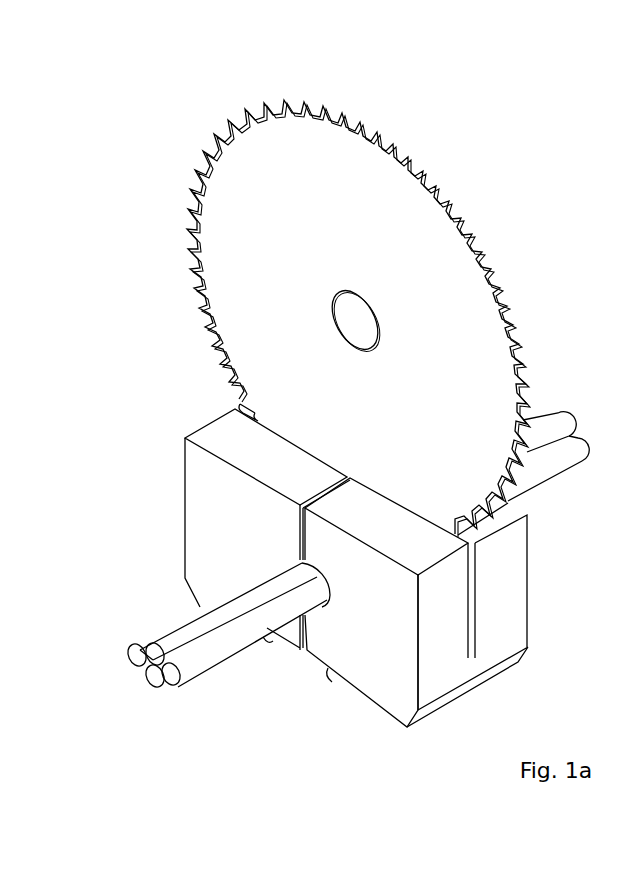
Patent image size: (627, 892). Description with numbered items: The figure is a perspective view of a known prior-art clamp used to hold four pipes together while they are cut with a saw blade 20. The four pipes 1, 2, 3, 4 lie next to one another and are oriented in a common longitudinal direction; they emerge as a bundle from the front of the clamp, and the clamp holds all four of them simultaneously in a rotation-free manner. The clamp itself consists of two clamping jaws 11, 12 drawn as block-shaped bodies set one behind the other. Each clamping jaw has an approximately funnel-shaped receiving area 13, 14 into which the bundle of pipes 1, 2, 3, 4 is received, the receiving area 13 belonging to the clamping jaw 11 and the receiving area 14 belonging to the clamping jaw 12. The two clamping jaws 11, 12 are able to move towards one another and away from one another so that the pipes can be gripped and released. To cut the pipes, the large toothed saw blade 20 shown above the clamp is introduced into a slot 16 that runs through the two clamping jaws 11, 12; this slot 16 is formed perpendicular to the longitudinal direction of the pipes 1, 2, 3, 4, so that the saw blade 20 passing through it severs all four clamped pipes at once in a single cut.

The saw blade 20 is at (342, 182).
The clamping jaw 12 is at (225, 470).
The clamping jaw 11 is at (382, 685).
The slot 16 is at (473, 642).
The receiving area 14 is at (280, 553).
The receiving area 13 is at (323, 604).
The pipe 1 is at (173, 680).
The pipe 2 is at (150, 688).
The pipe 3 is at (135, 647).
The pipe 4 is at (152, 646).